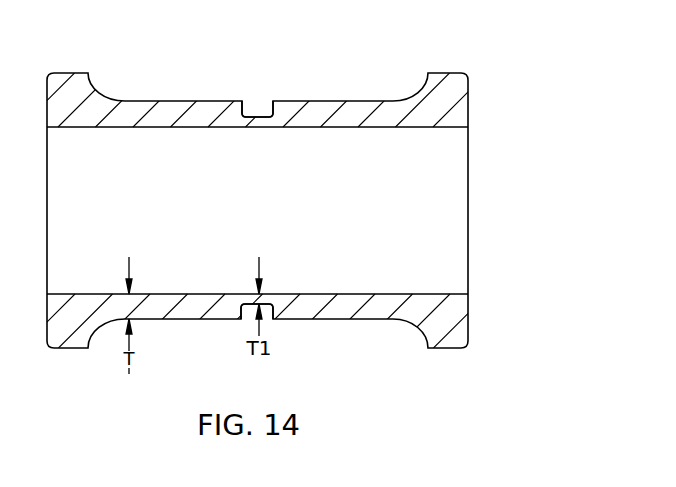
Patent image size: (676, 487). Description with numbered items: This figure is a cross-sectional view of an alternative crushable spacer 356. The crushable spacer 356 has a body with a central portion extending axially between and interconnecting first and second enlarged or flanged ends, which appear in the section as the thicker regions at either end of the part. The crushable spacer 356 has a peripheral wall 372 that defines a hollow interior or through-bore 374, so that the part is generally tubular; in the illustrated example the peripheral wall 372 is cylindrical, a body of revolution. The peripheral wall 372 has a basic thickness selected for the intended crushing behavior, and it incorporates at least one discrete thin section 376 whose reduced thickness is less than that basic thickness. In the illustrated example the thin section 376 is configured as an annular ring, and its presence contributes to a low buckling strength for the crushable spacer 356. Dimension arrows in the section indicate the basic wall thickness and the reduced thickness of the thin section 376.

The crushable spacer 356 is at (314, 47).
The peripheral wall 372 is at (124, 109).
The through-bore 374 is at (428, 128).
The thin section 376 is at (259, 116).